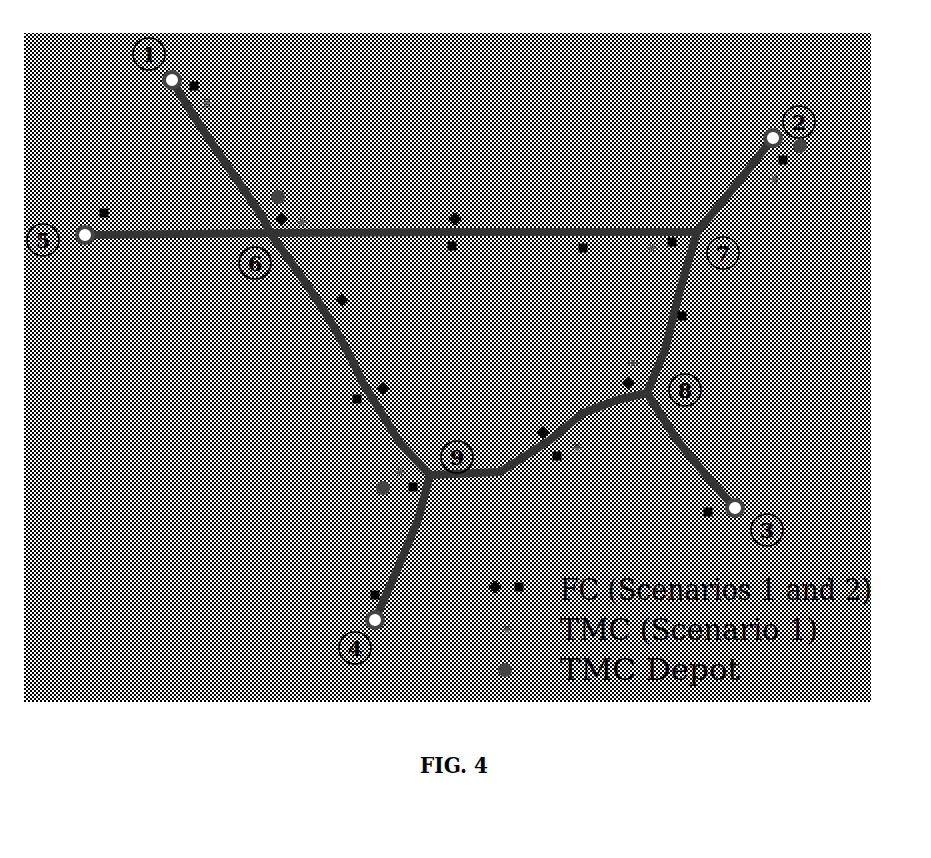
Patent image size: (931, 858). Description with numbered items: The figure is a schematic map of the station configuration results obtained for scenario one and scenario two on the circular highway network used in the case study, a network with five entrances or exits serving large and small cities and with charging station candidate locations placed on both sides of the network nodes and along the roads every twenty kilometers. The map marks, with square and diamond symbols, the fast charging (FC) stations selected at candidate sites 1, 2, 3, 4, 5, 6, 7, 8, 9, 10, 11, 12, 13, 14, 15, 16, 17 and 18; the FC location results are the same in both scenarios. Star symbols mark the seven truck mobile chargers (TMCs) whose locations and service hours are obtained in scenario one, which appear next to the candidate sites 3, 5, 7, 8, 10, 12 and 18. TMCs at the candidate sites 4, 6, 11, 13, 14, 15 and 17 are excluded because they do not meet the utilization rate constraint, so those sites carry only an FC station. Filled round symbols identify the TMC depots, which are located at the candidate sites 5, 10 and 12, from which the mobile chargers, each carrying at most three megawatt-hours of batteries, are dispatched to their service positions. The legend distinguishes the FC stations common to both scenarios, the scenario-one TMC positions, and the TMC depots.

The charging station candidate site 1 is at (446, 260).
The charging station candidate site 2 is at (585, 264).
The charging station candidate site 3 is at (662, 258).
The charging station candidate site 4 is at (364, 417).
The charging station candidate site 5 is at (397, 490).
The charging station candidate site 6 is at (535, 421).
The charging station candidate site 7 is at (623, 374).
The charging station candidate site 8 is at (207, 86).
The charging station candidate site 9 is at (110, 199).
The charging station candidate site 10 is at (798, 166).
The charging station candidate site 11 is at (468, 204).
The charging station candidate site 12 is at (299, 203).
The charging station candidate site 13 is at (701, 528).
The charging station candidate site 14 is at (700, 322).
The charging station candidate site 15 is at (359, 593).
The charging station candidate site 16 is at (404, 379).
The charging station candidate site 17 is at (354, 289).
The charging station candidate site 18 is at (571, 466).